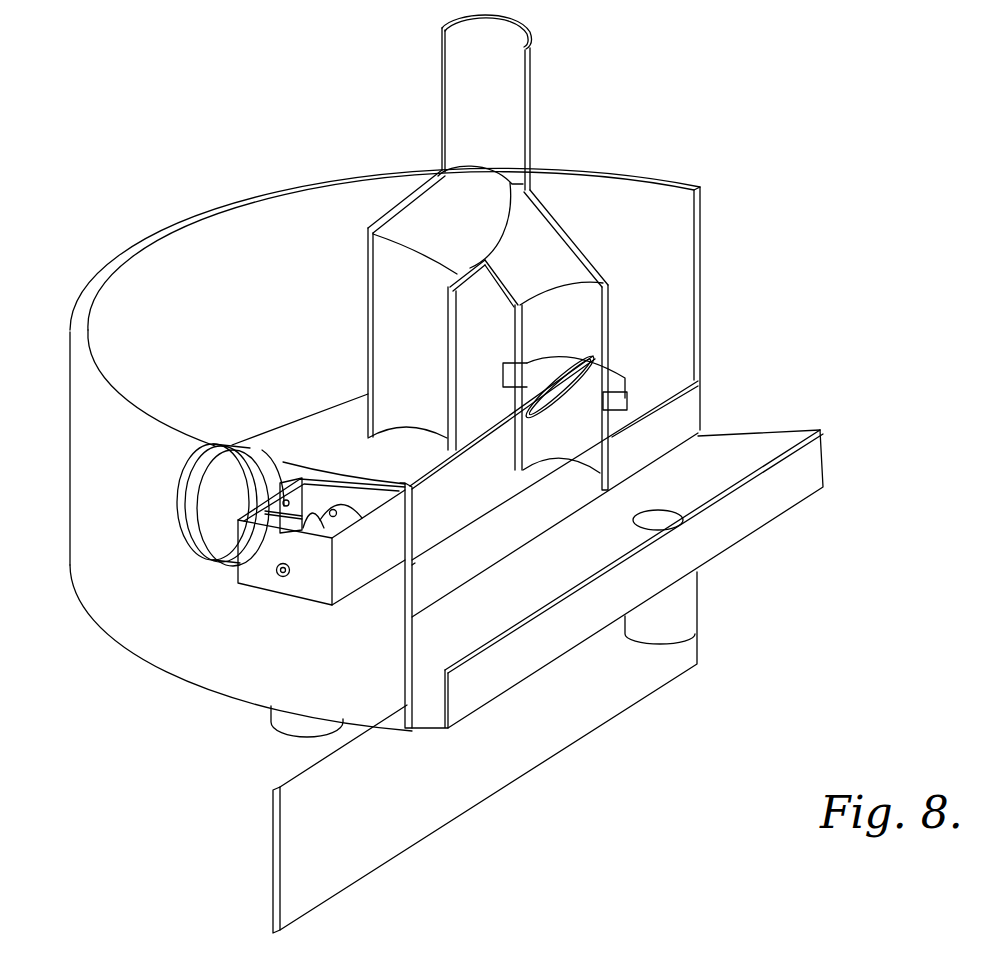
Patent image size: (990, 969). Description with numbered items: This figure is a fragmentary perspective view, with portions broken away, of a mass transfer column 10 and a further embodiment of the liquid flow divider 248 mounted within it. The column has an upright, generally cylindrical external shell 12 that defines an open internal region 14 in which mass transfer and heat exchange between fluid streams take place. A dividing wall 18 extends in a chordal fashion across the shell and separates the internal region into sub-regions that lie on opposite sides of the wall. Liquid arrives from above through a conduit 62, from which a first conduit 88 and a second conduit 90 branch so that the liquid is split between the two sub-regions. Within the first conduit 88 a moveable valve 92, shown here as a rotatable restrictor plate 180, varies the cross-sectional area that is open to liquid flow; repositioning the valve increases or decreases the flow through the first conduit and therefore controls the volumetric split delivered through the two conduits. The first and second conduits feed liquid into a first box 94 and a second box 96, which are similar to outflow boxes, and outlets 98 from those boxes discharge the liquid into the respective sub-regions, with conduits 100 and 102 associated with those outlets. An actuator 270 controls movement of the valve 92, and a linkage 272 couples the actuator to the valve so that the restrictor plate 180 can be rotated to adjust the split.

The mass transfer column 10 is at (227, 188).
The external shell 12 is at (318, 182).
The open internal region 14 is at (196, 285).
The dividing wall 18 is at (573, 720).
The conduit 62 is at (517, 80).
The first conduit 88 is at (560, 260).
The second conduit 90 is at (385, 268).
The moveable valve 92 is at (535, 370).
The first box 94 is at (673, 430).
The second box 96 is at (398, 482).
The outlets 98 is at (650, 525).
The conduit 100 is at (646, 598).
The conduit 102 is at (297, 726).
The rotatable restrictor plate 180 is at (578, 395).
The liquid flow divider 248 is at (620, 165).
The actuator 270 is at (181, 507).
The linkage 272 is at (286, 528).